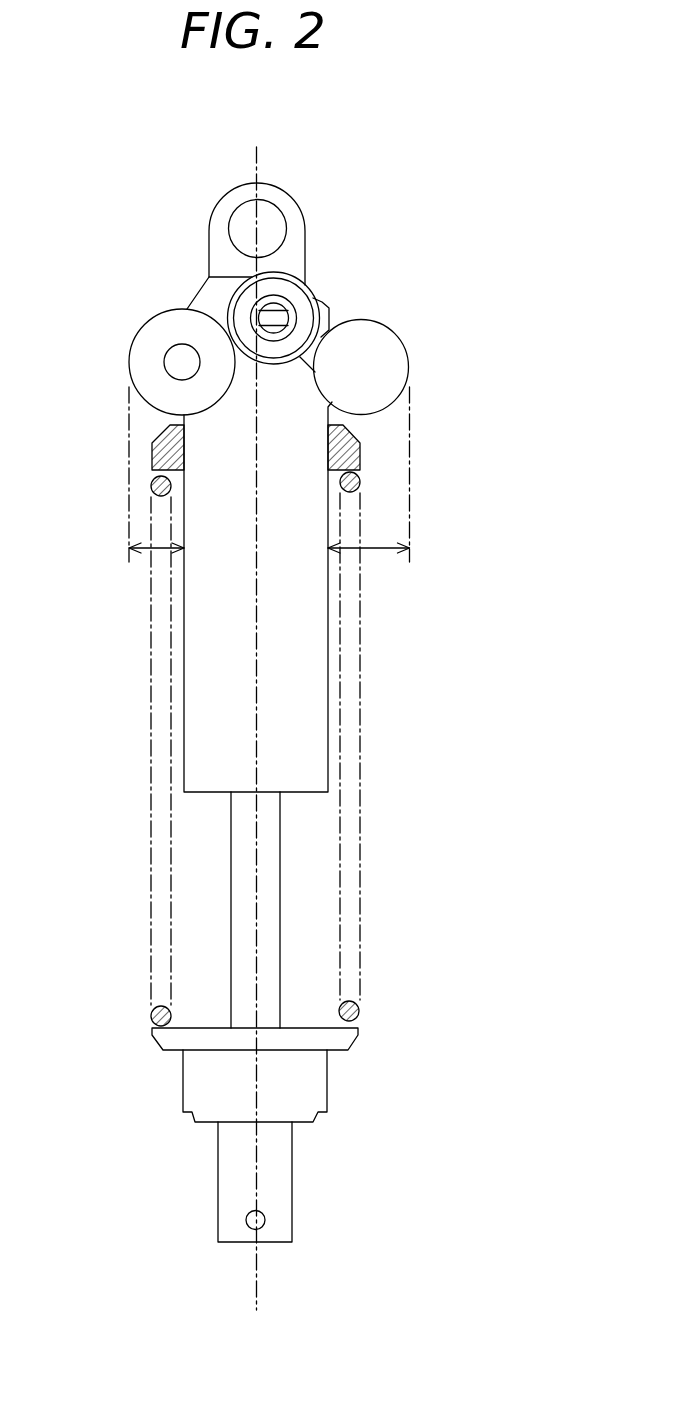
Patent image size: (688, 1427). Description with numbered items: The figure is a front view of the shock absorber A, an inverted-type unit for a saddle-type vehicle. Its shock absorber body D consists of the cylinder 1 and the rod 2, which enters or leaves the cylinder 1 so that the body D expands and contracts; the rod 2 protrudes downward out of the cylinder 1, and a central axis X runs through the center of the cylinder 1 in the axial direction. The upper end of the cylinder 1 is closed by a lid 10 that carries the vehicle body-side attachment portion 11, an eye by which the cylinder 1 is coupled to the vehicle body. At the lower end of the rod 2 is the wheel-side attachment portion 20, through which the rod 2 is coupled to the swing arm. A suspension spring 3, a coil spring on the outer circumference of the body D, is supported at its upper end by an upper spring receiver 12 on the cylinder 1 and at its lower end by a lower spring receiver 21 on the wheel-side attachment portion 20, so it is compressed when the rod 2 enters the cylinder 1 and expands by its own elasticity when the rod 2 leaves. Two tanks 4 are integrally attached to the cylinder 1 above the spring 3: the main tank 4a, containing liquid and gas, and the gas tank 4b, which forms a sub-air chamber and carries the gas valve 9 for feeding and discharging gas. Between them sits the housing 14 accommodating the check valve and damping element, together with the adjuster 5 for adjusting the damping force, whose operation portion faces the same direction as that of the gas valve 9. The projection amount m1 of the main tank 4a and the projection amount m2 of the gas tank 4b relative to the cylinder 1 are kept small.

The shock absorber A is at (122, 150).
The central axis X is at (258, 712).
The cylinder 1 is at (318, 675).
The rod 2 is at (275, 860).
The suspension spring 3 is at (358, 1003).
The tank 4 is at (274, 351).
The main tank 4a is at (403, 337).
The gas tank 4b is at (150, 317).
The adjuster 5 is at (287, 315).
The gas valve 9 is at (165, 362).
The lid 10 is at (195, 305).
The vehicle body-side attachment portion 11 is at (285, 192).
The upper spring receiver 12 is at (362, 453).
The housing 14 is at (292, 276).
The wheel-side attachment portion 20 is at (283, 1180).
The lower spring receiver 21 is at (153, 1031).
The shock absorber body D is at (172, 714).
The projection amount m1 is at (383, 552).
The projection amount m2 is at (150, 552).